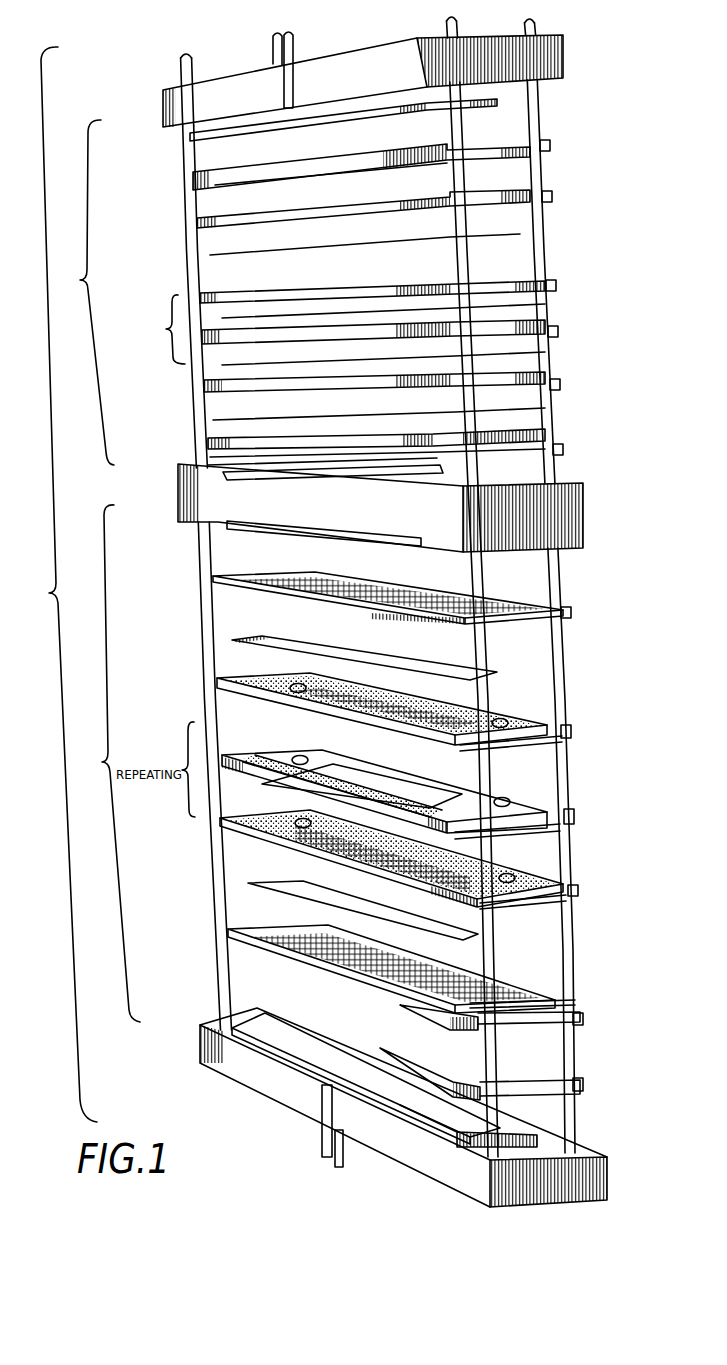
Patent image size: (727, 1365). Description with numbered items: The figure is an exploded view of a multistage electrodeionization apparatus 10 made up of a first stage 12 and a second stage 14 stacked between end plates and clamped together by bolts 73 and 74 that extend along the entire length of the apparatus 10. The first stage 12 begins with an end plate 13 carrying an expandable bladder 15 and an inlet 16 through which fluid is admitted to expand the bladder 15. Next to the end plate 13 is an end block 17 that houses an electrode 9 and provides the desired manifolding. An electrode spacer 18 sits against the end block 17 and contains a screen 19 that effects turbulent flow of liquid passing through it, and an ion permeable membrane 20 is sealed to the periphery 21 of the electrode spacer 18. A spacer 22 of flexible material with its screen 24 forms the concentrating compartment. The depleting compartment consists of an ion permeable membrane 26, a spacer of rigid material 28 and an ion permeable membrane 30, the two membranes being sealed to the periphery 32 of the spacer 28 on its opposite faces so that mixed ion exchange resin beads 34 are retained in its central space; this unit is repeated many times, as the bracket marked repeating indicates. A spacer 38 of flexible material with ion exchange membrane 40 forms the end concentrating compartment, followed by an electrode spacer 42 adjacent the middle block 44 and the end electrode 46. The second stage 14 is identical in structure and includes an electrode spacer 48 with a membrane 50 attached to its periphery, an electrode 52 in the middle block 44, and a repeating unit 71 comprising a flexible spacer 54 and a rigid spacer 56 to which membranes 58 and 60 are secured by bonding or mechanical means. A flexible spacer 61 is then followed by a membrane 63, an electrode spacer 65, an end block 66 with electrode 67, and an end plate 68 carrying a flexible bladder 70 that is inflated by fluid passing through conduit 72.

The electrode 9 is at (363, 1022).
The electrodeionization apparatus 10 is at (59, 584).
The first stage 12 is at (108, 763).
The end plate 13 is at (598, 1182).
The second stage 14 is at (84, 292).
The expandable bladder 15 is at (507, 1128).
The inlet 16 is at (322, 1125).
The end block 17 is at (583, 1090).
The electrode spacer 18 is at (583, 1020).
The screen 19 is at (273, 927).
The ion permeable membrane 20 is at (503, 965).
The periphery 21 is at (511, 998).
The spacer 22 is at (578, 891).
The screen 24 is at (293, 842).
The ion permeable membrane 26 is at (483, 835).
The spacer formed of rigid material 28 is at (574, 817).
The ion permeable membrane 30 is at (490, 772).
The periphery 32 is at (253, 756).
The mixed ion exchange resin beads 34 is at (293, 790).
The spacer formed of flexible material 38 is at (571, 732).
The ion exchange membrane 40 is at (500, 676).
The electrode spacer 42 is at (571, 613).
The middle block 44 is at (568, 508).
The end electrode 46 is at (390, 540).
The electrode spacer 48 is at (563, 450).
The membrane 50 is at (490, 422).
The electrode 52 is at (356, 477).
The spacer formed of flexible material 54 is at (560, 385).
The spacer formed of rigid material 56 is at (558, 332).
The membrane 58 is at (513, 310).
The membrane 60 is at (493, 360).
The spacer formed of flexible material 61 is at (556, 285).
The membrane 63 is at (522, 236).
The electrode spacer 65 is at (552, 197).
The end block 66 is at (550, 145).
The electrode 67 is at (382, 165).
The end plate 68 is at (565, 47).
The flexible bladder 70 is at (368, 113).
The repeating unit 71 is at (176, 344).
The conduit 72 is at (292, 83).
The bolt 73 is at (530, 19).
The bolt 74 is at (448, 19).